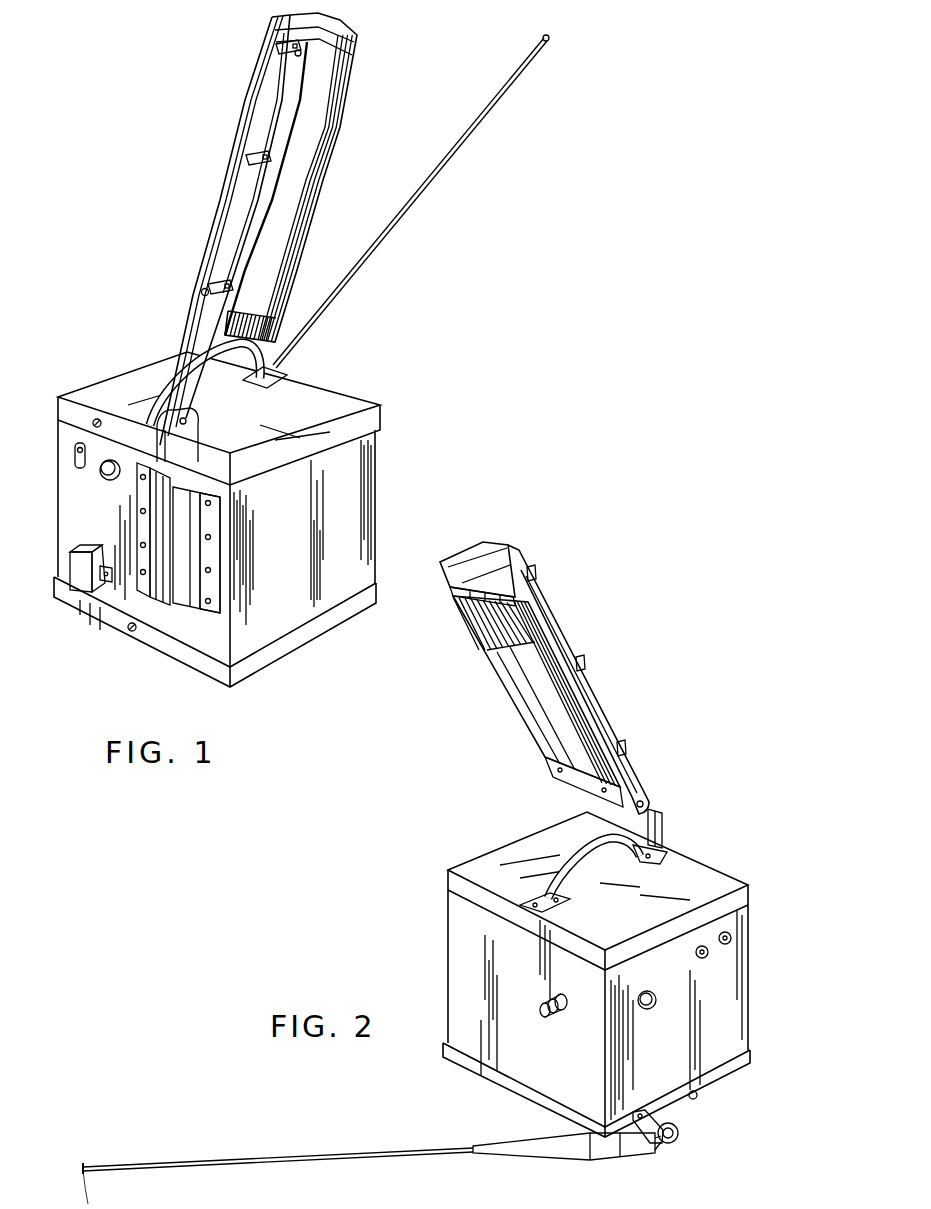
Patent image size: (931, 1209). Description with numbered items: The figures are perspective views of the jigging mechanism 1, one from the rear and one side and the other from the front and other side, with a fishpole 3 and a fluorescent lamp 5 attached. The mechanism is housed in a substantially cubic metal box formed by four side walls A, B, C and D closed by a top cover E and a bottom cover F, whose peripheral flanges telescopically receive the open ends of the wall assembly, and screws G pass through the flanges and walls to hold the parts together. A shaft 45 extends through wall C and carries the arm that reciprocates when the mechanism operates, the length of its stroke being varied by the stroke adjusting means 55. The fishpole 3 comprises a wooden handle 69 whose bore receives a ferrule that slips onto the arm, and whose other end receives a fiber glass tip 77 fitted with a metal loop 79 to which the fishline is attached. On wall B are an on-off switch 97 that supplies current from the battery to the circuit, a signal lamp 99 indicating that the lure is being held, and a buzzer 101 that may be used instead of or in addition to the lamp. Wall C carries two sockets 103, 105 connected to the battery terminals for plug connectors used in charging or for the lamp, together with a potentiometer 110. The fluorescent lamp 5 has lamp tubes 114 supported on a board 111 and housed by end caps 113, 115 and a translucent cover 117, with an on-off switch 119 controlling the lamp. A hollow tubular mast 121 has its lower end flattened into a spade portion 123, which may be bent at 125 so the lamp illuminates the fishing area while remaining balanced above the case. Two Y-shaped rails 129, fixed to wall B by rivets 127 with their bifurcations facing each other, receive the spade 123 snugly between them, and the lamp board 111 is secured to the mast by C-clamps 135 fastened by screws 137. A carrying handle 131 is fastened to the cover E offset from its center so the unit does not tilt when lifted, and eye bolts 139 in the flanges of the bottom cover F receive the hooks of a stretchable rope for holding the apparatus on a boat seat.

In FIG. 1, the jigging mechanism 1 is at (386, 428).
In FIG. 2, the jigging mechanism 1 is at (438, 898).
In FIG. 1, the fishpole 3 is at (454, 196).
In FIG. 2, the fishpole 3 is at (355, 1154).
In FIG. 1, the fluorescent lamp 5 is at (284, 172).
In FIG. 2, the fluorescent lamp 5 is at (532, 651).
In FIG. 2, the shaft 45 is at (672, 1145).
In FIG. 2, the stroke adjusting means 55 is at (535, 1022).
In FIG. 2, the wooden handle 69 is at (560, 1150).
In FIG. 1, the tip 77 is at (430, 202).
In FIG. 2, the tip 77 is at (353, 1160).
In FIG. 1, the metal tip or loop 79 is at (548, 38).
In FIG. 2, the metal tip or loop 79 is at (83, 1165).
In FIG. 1, the on-off switch 97 is at (72, 462).
In FIG. 1, the signal lamp 99 is at (103, 478).
In FIG. 1, the buzzer 101 is at (78, 572).
In FIG. 2, the socket 103 is at (730, 937).
In FIG. 2, the socket 105 is at (707, 952).
In FIG. 2, the potentiometer 110 is at (655, 990).
In FIG. 1, the board 111 is at (270, 140).
In FIG. 2, the board 111 is at (536, 691).
In FIG. 1, the end cap 113 is at (193, 303).
In FIG. 2, the end cap 113 is at (622, 770).
In FIG. 2, the lamp tubes 114 is at (568, 725).
In FIG. 1, the end cap 115 is at (355, 42).
In FIG. 2, the end cap 115 is at (473, 552).
In FIG. 2, the translucent cover 117 is at (478, 630).
In FIG. 2, the on-off switch 119 is at (572, 790).
In FIG. 1, the mast 121 is at (200, 293).
In FIG. 2, the mast 121 is at (640, 792).
In FIG. 1, the spade portion 123 is at (195, 449).
In FIG. 1, the bend 125 is at (192, 419).
In FIG. 1, the rivets 127 is at (218, 602).
In FIG. 1, the Y-shaped rails 129 is at (188, 607).
In FIG. 1, the carrying handle 131 is at (272, 358).
In FIG. 2, the carrying handle 131 is at (655, 842).
In FIG. 1, the C-clamps 135 is at (283, 43).
In FIG. 2, the C-clamps 135 is at (535, 572).
In FIG. 1, the screws 137 is at (292, 53).
In FIG. 2, the eye bolts 139 is at (697, 1097).
In FIG. 1, the side wall A is at (358, 515).
In FIG. 1, the side wall B is at (188, 625).
In FIG. 2, the side wall C is at (740, 1012).
In FIG. 2, the side wall D is at (460, 995).
In FIG. 1, the top cover E is at (95, 383).
In FIG. 2, the top cover E is at (718, 875).
In FIG. 2, the bottom cover F is at (715, 1087).
In FIG. 1, the screws G is at (93, 423).